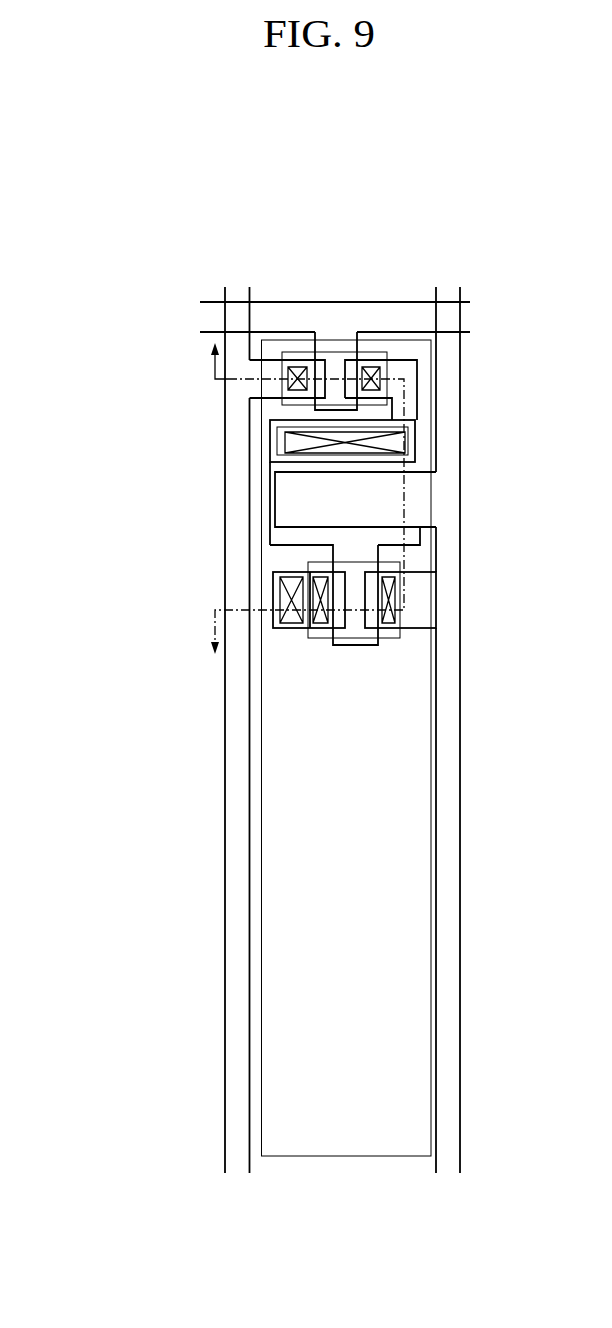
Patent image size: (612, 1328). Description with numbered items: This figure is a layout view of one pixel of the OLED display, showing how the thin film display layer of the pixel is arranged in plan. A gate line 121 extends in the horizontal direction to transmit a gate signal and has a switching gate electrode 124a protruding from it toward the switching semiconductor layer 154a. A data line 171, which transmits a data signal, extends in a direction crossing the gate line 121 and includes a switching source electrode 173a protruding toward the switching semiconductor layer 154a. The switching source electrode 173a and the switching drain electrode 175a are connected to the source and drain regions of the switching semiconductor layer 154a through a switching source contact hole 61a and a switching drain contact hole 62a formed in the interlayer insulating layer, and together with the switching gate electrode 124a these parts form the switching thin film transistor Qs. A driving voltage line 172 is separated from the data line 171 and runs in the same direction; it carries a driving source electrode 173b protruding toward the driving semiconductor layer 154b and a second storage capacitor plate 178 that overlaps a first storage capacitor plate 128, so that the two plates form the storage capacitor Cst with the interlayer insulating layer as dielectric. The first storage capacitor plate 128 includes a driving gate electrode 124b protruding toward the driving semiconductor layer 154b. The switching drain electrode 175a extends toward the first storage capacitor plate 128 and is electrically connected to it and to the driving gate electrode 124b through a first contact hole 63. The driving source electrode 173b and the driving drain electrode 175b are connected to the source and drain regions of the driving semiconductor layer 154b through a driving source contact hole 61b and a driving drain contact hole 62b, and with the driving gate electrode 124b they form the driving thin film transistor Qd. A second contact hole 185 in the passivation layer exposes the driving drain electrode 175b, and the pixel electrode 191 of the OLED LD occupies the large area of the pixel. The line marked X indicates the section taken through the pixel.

The gate line 121 is at (200, 302).
The data line 171 is at (248, 413).
The driving voltage line 172 is at (436, 437).
The pixel electrode 191 is at (262, 897).
The switching thin film transistor Qs is at (460, 196).
The switching source electrode 173a is at (272, 360).
The switching gate electrode 124a is at (335, 405).
The switching semiconductor layer 154a is at (345, 352).
The switching drain electrode 175a is at (401, 360).
The switching source contact hole 61a is at (291, 380).
The switching drain contact hole 62a is at (373, 379).
The storage capacitor Cst is at (118, 498).
The second storage capacitor plate 178 is at (290, 525).
The first storage capacitor plate 128 is at (270, 533).
The first contact hole 63 is at (285, 443).
The driving thin film transistor Qd is at (105, 655).
The driving gate electrode 124b is at (362, 645).
The driving semiconductor layer 154b is at (327, 640).
The driving drain electrode 175b is at (294, 628).
The driving source electrode 173b is at (412, 628).
The second contact hole 185 is at (280, 592).
The driving drain contact hole 62b is at (327, 583).
The driving source contact hole 61b is at (396, 596).
The section line X is at (212, 348).
The OLED LD is at (292, 970).